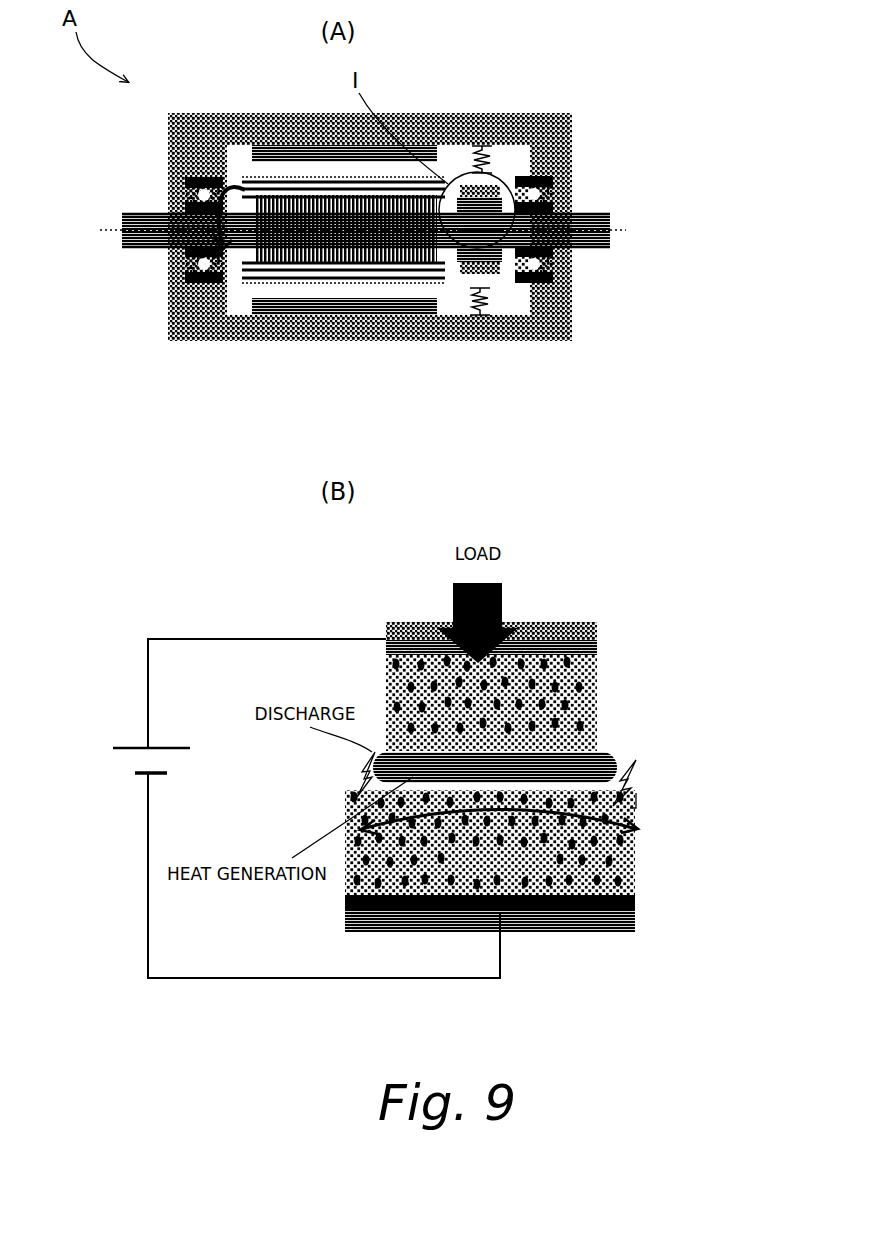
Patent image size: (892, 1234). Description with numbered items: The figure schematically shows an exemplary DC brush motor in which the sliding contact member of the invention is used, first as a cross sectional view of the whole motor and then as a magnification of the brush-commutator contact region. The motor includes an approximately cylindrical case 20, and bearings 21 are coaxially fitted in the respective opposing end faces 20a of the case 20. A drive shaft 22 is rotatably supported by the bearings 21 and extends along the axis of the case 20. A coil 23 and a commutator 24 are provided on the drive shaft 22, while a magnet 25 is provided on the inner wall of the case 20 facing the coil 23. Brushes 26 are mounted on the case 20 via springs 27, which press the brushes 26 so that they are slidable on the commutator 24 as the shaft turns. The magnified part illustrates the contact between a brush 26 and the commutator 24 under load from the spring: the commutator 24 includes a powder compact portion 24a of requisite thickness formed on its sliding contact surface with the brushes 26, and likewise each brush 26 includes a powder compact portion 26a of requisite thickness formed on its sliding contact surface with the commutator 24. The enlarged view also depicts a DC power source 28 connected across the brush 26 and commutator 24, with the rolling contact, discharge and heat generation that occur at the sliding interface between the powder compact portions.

The case 20 is at (205, 113).
The end face 20a is at (168, 150).
The bearing 21 is at (186, 205).
The drive shaft 22 is at (122, 225).
The coil 23 is at (390, 277).
The commutator 24 is at (481, 247).
The powder compact portion 24a is at (636, 855).
The magnet 25 is at (288, 145).
The brush 26 is at (488, 184).
The powder compact portion 26a is at (598, 691).
The spring 27 is at (468, 152).
The power source 28 is at (118, 763).